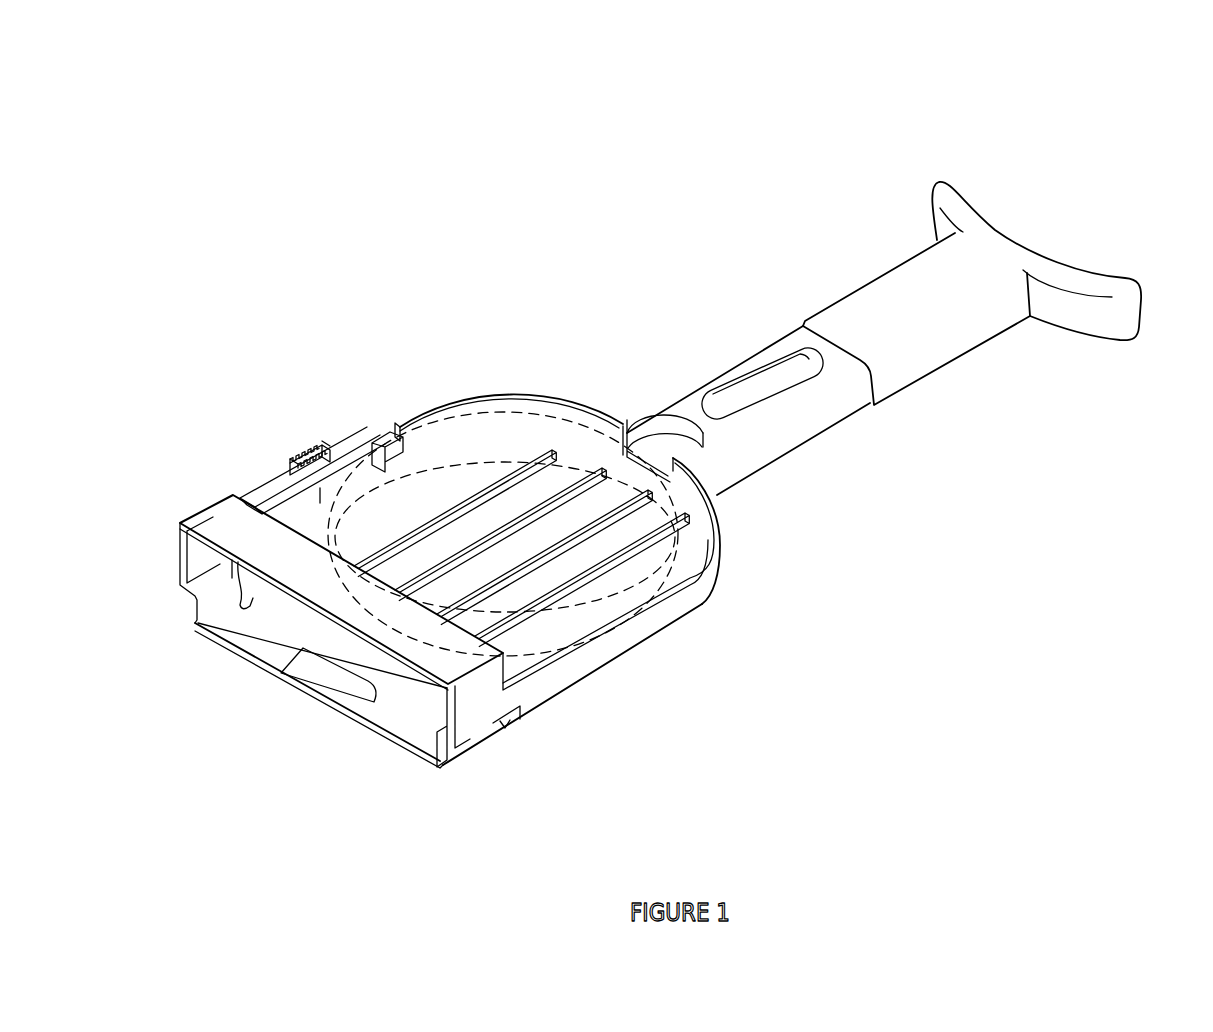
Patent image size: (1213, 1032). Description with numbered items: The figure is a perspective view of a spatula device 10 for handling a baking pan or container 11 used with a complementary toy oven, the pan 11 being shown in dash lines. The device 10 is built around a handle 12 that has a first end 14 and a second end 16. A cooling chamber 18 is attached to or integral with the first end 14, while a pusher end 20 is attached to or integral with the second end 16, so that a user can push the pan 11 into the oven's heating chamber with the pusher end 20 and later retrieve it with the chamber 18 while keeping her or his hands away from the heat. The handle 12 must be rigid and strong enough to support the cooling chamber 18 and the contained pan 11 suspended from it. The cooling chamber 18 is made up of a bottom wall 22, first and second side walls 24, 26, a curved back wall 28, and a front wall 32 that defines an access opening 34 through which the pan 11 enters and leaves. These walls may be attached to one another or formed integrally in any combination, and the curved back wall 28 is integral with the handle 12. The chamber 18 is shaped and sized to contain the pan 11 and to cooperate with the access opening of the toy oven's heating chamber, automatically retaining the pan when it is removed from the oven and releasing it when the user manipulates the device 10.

The spatula device 10 is at (410, 283).
The baking pan or container 11 is at (578, 636).
The handle 12 is at (690, 390).
The first end 14 is at (758, 452).
The second end 16 is at (912, 360).
The cooling chamber 18 is at (647, 644).
The pusher end 20 is at (995, 228).
The bottom wall 22 is at (621, 551).
The first side wall 24 is at (697, 605).
The second side wall 26 is at (471, 452).
The curved back wall 28 is at (725, 527).
The front wall 32 is at (438, 755).
The access opening 34 is at (306, 606).